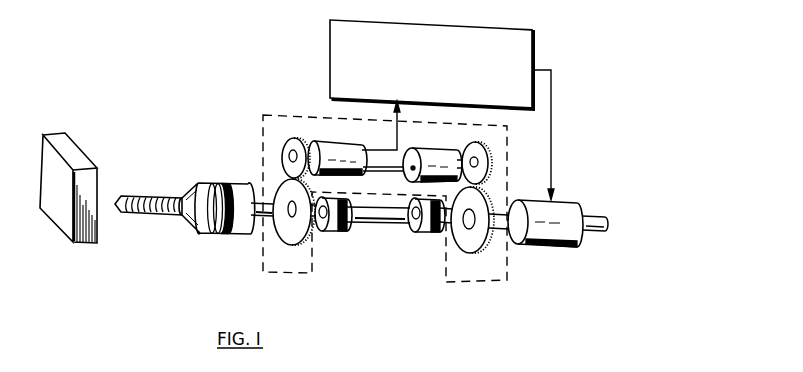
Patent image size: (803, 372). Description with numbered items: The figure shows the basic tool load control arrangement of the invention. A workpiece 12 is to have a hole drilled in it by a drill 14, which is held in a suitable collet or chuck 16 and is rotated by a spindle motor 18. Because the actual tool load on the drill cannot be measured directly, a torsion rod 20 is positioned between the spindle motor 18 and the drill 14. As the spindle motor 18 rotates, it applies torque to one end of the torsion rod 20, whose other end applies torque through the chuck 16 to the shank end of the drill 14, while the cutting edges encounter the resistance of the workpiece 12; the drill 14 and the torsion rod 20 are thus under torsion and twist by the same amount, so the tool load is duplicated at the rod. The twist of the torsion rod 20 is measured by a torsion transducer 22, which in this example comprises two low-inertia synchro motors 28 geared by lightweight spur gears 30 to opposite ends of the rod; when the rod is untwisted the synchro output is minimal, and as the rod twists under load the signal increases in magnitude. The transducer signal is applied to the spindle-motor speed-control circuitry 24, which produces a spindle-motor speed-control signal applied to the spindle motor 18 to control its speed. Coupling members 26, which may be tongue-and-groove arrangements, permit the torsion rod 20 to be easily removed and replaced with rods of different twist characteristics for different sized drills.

The workpiece 12 is at (67, 146).
The drill 14 is at (156, 196).
The chuck 16 is at (243, 235).
The spindle motor 18 is at (540, 240).
The torsion rod 20 is at (386, 234).
The torsion transducer 22 is at (263, 115).
The spindle-motor speed-control circuitry 24 is at (331, 53).
The coupling members 26 is at (342, 234).
The synchro motors 28 is at (340, 150).
The spur gears 30 is at (286, 183).